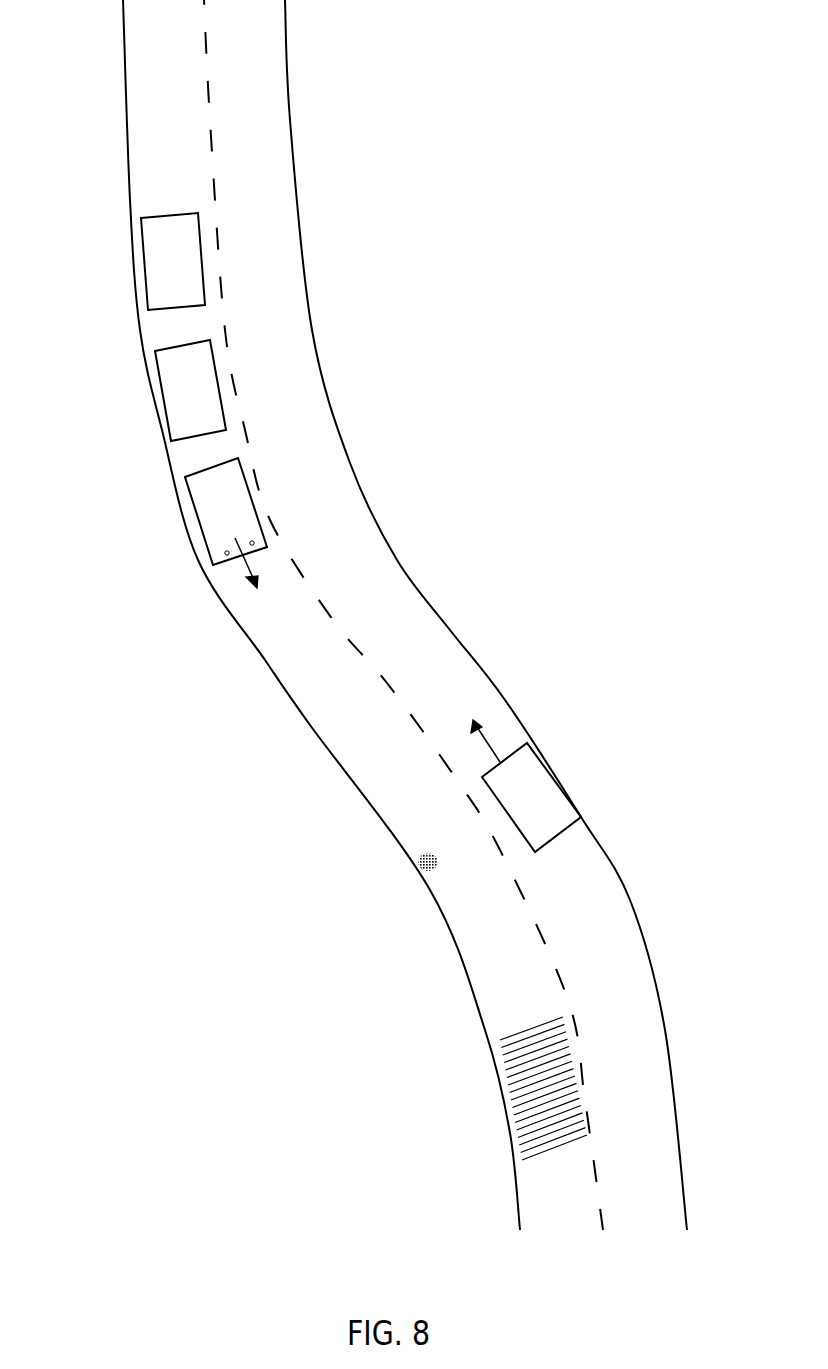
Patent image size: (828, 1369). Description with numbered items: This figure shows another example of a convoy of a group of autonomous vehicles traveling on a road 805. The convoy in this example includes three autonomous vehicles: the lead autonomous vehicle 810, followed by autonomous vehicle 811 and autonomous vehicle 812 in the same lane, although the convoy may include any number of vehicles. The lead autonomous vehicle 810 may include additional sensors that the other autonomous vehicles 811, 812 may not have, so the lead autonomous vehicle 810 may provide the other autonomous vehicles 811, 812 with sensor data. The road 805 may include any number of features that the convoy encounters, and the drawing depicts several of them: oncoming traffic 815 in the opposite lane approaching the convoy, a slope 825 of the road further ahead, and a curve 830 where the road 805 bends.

The road 805 is at (433, 612).
The autonomous vehicle 810 is at (208, 520).
The autonomous vehicle 811 is at (173, 390).
The autonomous vehicle 812 is at (155, 260).
The oncoming traffic 815 is at (555, 792).
The slope 825 is at (510, 1078).
The curve 830 is at (236, 850).